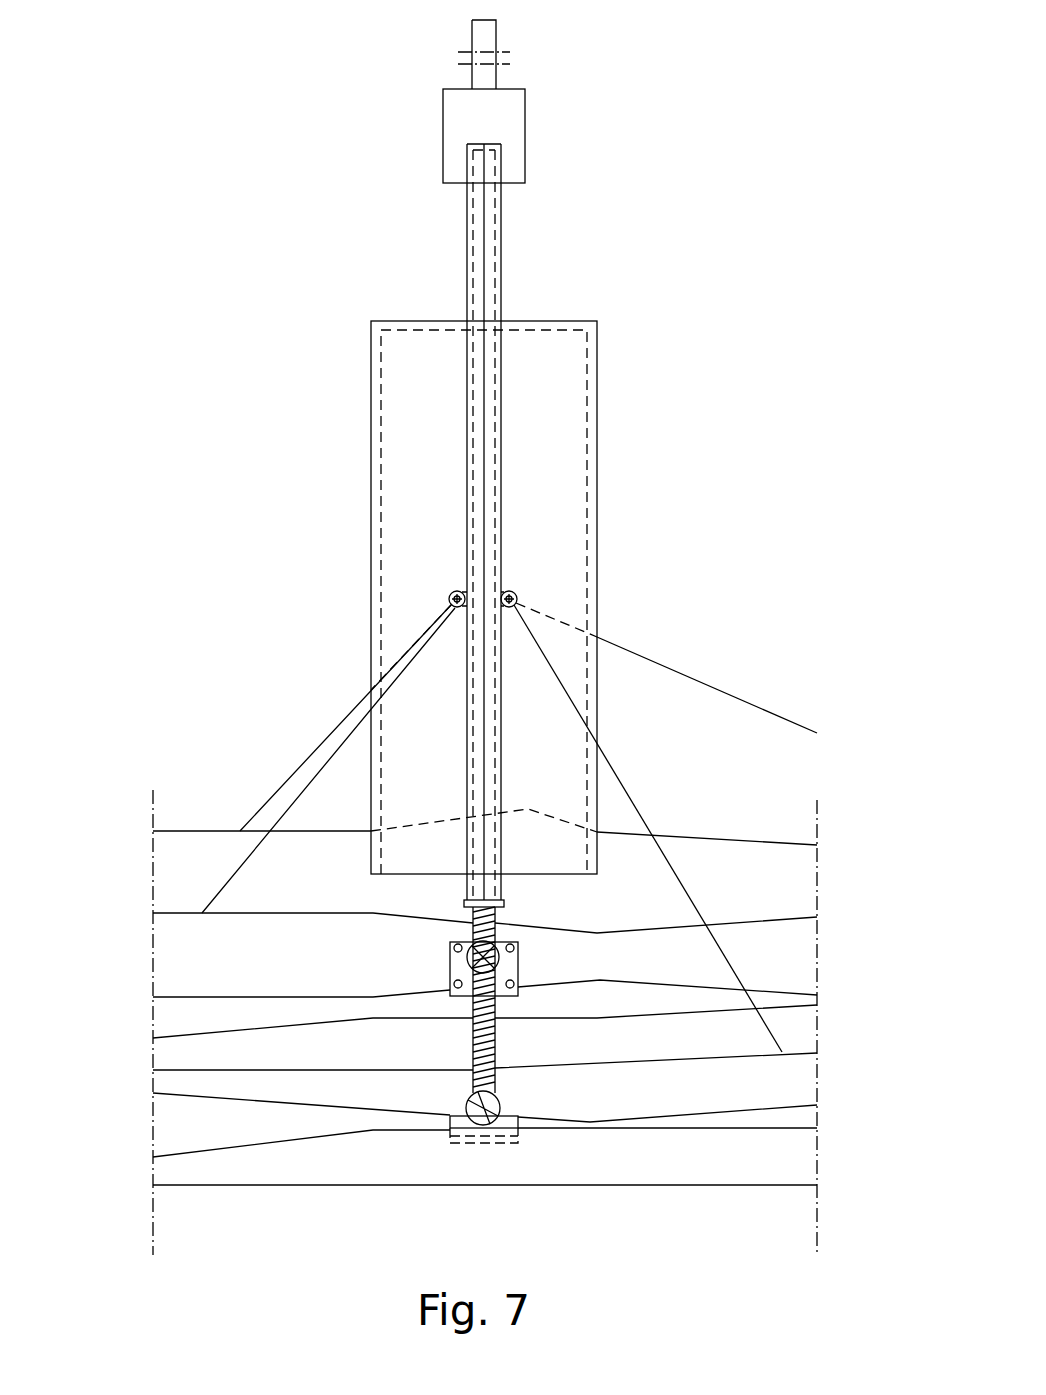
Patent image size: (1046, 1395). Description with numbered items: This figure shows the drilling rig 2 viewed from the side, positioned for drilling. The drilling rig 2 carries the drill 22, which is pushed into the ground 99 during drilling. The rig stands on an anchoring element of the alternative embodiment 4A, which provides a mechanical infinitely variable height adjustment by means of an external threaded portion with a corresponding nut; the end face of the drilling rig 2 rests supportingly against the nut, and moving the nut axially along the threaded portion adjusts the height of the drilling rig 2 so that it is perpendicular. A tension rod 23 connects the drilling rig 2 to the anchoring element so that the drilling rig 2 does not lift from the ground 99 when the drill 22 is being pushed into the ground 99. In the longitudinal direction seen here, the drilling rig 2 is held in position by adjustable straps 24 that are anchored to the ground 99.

The drilling rig 2 is at (500, 287).
The drill 22 is at (597, 673).
The adjustable straps 24 is at (330, 753).
The ground 99 is at (225, 831).
The tension rod 23 is at (473, 980).
The anchoring element with height adjustment 4A is at (492, 1050).